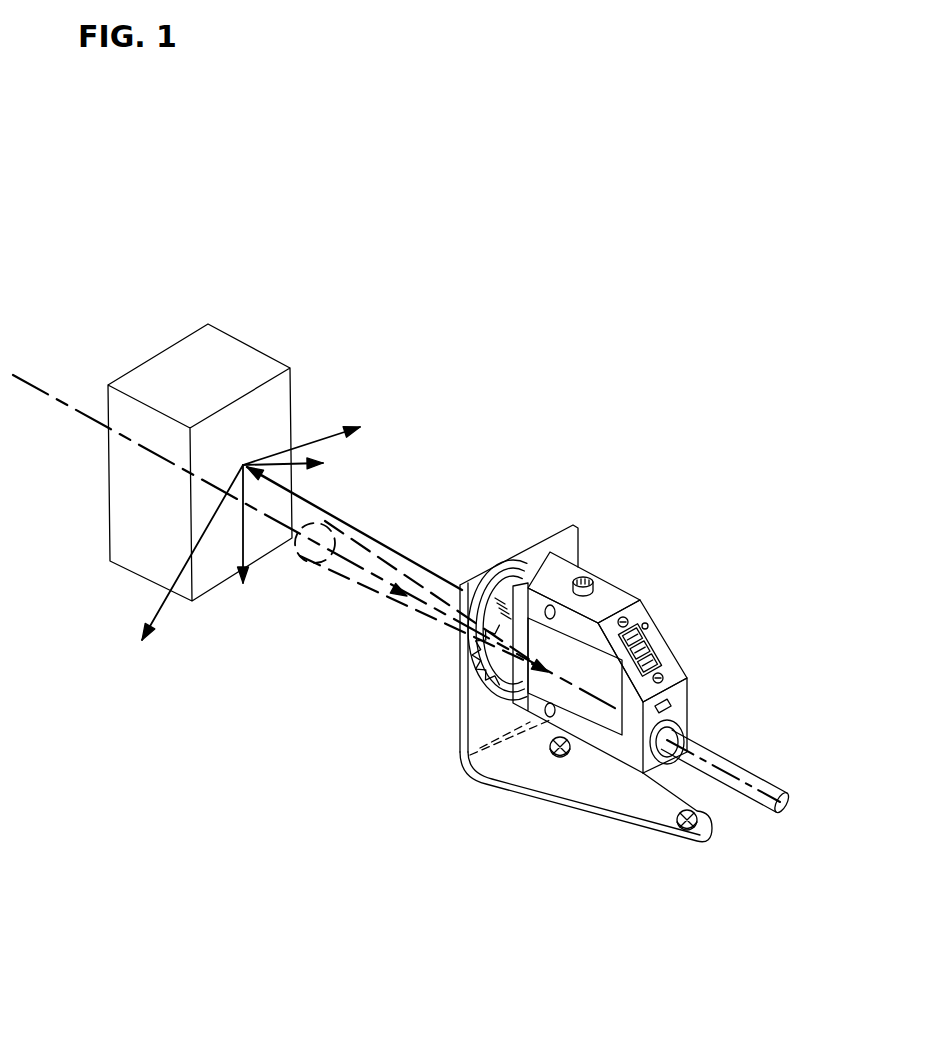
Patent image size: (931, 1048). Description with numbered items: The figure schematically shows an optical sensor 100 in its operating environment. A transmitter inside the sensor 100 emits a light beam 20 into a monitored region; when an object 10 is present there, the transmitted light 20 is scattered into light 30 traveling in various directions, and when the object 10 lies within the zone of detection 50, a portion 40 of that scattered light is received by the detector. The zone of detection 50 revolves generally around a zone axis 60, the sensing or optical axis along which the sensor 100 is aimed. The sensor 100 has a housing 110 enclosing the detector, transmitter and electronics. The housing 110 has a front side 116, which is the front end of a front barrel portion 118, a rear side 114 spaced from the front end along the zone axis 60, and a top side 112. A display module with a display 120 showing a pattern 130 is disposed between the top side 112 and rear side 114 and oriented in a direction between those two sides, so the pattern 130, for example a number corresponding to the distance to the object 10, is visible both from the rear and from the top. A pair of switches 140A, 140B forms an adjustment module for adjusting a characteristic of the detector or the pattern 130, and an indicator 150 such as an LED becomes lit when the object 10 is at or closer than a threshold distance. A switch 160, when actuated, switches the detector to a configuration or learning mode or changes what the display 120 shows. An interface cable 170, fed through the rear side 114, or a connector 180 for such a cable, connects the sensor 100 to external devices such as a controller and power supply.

The object 10 is at (237, 338).
The light beam 20 is at (335, 517).
The scattered light 30 is at (167, 600).
The portion of the scattered light 40 is at (270, 520).
The zone of detection 50 is at (358, 580).
The zone axis 60 is at (43, 391).
The sensor 100 is at (521, 394).
The housing 110 is at (588, 578).
The top side 112 is at (597, 625).
The rear side 114 is at (688, 718).
The front side 116 is at (462, 563).
The front barrel portion 118 is at (492, 556).
The display 120 is at (645, 624).
The pattern 130 is at (650, 643).
The switch 140A is at (625, 622).
The switch 140B is at (665, 678).
The indicator 150 is at (607, 597).
The switch 160 is at (668, 698).
The interface cable 170 is at (738, 793).
The connector 180 is at (670, 763).